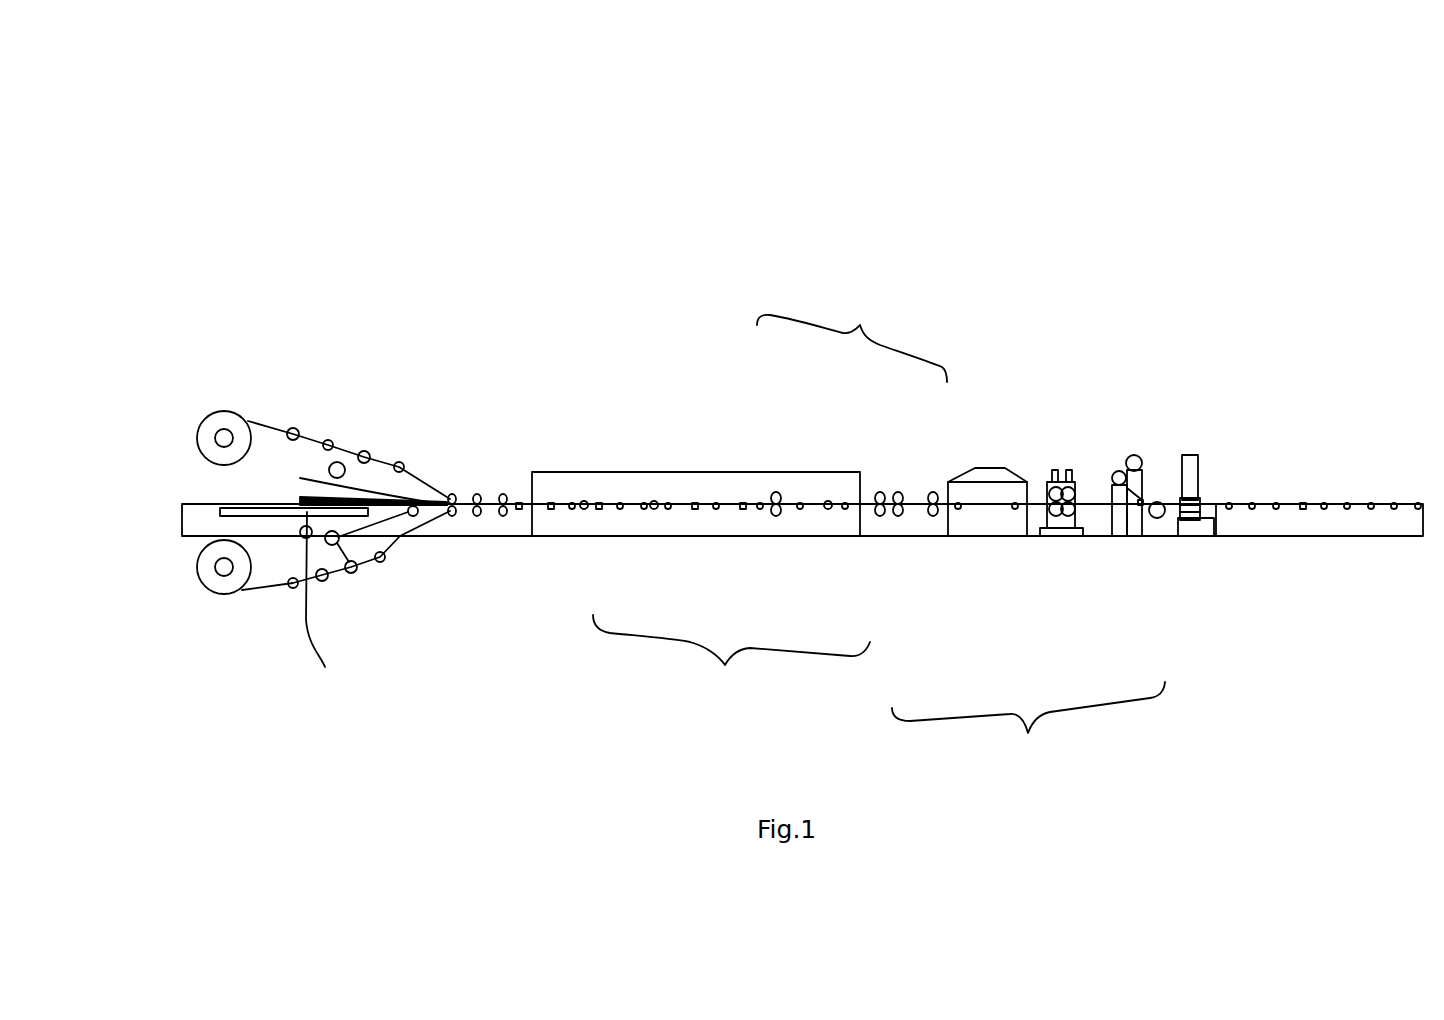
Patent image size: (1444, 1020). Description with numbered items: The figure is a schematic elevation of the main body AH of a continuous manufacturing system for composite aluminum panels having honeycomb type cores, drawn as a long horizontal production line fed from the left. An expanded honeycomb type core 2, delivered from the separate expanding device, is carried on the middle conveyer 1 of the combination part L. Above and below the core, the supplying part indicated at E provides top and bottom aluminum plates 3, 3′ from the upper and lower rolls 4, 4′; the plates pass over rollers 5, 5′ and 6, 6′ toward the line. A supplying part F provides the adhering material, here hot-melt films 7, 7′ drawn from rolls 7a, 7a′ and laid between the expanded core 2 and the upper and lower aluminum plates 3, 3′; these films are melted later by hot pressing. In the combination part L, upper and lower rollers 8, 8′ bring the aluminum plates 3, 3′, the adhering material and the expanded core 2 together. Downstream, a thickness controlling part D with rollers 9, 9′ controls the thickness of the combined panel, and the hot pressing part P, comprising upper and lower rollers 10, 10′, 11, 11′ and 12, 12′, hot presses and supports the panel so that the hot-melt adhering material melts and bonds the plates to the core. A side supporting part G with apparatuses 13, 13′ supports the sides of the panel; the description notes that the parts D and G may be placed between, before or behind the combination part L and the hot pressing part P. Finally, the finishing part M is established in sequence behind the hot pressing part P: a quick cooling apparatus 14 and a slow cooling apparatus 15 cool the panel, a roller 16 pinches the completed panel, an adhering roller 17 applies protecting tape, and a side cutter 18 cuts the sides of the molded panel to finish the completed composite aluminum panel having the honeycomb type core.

The middle conveyer 1 is at (319, 607).
The expanded honeycomb type core 2 is at (368, 454).
The top aluminum plate 3 is at (270, 420).
The bottom aluminum plate 3′ is at (243, 590).
The upper roll 4 is at (218, 416).
The lower roll 4′ is at (228, 592).
The roller 5 is at (298, 430).
The roller 5′ is at (292, 589).
The roller 6 is at (332, 442).
The roller 6′ is at (325, 580).
The hot-melt film 7 is at (452, 494).
The hot-melt film 7′ is at (382, 563).
The roll 7a is at (399, 466).
The roll 7a′ is at (352, 572).
The upper roller 8 is at (467, 480).
The lower roller 8′ is at (452, 516).
The roller 9 is at (504, 494).
The roller 9′ is at (477, 516).
The upper roller 10 is at (522, 500).
The lower roller 10′ is at (503, 516).
The upper roller 11 is at (778, 493).
The lower roller 11′ is at (777, 515).
The upper roller 12 is at (898, 493).
The lower roller 12′ is at (880, 515).
The side supporting apparatus 13 is at (586, 502).
The side supporting apparatus 13′ is at (656, 502).
The quick cooling apparatus 14 is at (907, 537).
The slow cooling apparatus 15 is at (988, 540).
The roller for pinching the completed panel 16 is at (1060, 547).
The adhering roller for protecting tape 17 is at (1143, 497).
The side cutter 18 is at (1156, 518).
The feed direction E is at (245, 408).
The supplying part for adhering materials F is at (405, 482).
The combination part L is at (478, 494).
The thickness controlling part D is at (630, 350).
The main body of the continuous manufacturing system AH is at (590, 245).
The side supporting part G is at (810, 382).
The hot pressing part P is at (731, 655).
The finishing part M is at (1028, 725).